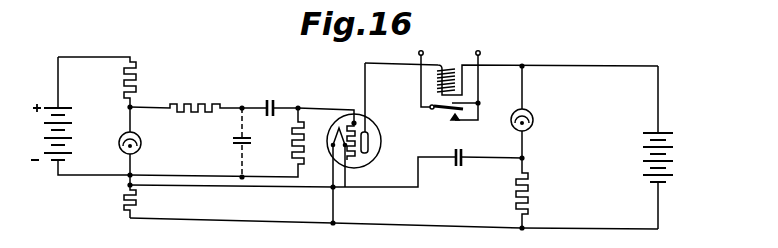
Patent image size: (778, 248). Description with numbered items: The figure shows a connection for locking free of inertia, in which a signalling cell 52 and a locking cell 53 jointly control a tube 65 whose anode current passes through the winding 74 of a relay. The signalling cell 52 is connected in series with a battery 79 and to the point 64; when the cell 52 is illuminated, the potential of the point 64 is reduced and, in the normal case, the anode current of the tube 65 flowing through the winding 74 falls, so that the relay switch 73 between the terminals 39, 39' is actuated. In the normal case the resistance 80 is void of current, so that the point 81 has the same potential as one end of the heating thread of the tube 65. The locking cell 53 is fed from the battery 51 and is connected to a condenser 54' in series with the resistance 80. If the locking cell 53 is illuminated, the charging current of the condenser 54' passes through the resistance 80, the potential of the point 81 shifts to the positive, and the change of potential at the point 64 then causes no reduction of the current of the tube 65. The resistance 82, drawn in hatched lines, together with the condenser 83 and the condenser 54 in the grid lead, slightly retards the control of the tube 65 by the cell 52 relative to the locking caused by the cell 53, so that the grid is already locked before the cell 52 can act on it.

The battery 79 is at (78, 116).
The point 64 is at (122, 108).
The signalling cell 52 is at (137, 141).
The resistance 82 is at (199, 100).
The condenser 83 is at (247, 142).
The condenser 54 is at (281, 102).
The tube 65 is at (358, 143).
The condenser 54' is at (461, 167).
The point 81 is at (121, 184).
The resistance 80 is at (139, 201).
The winding of the relay 74 is at (440, 80).
The terminal 39 is at (418, 51).
The terminal 39' is at (477, 51).
The relay switch 73 is at (451, 95).
The locking cell 53 is at (532, 113).
The battery 51 is at (668, 147).